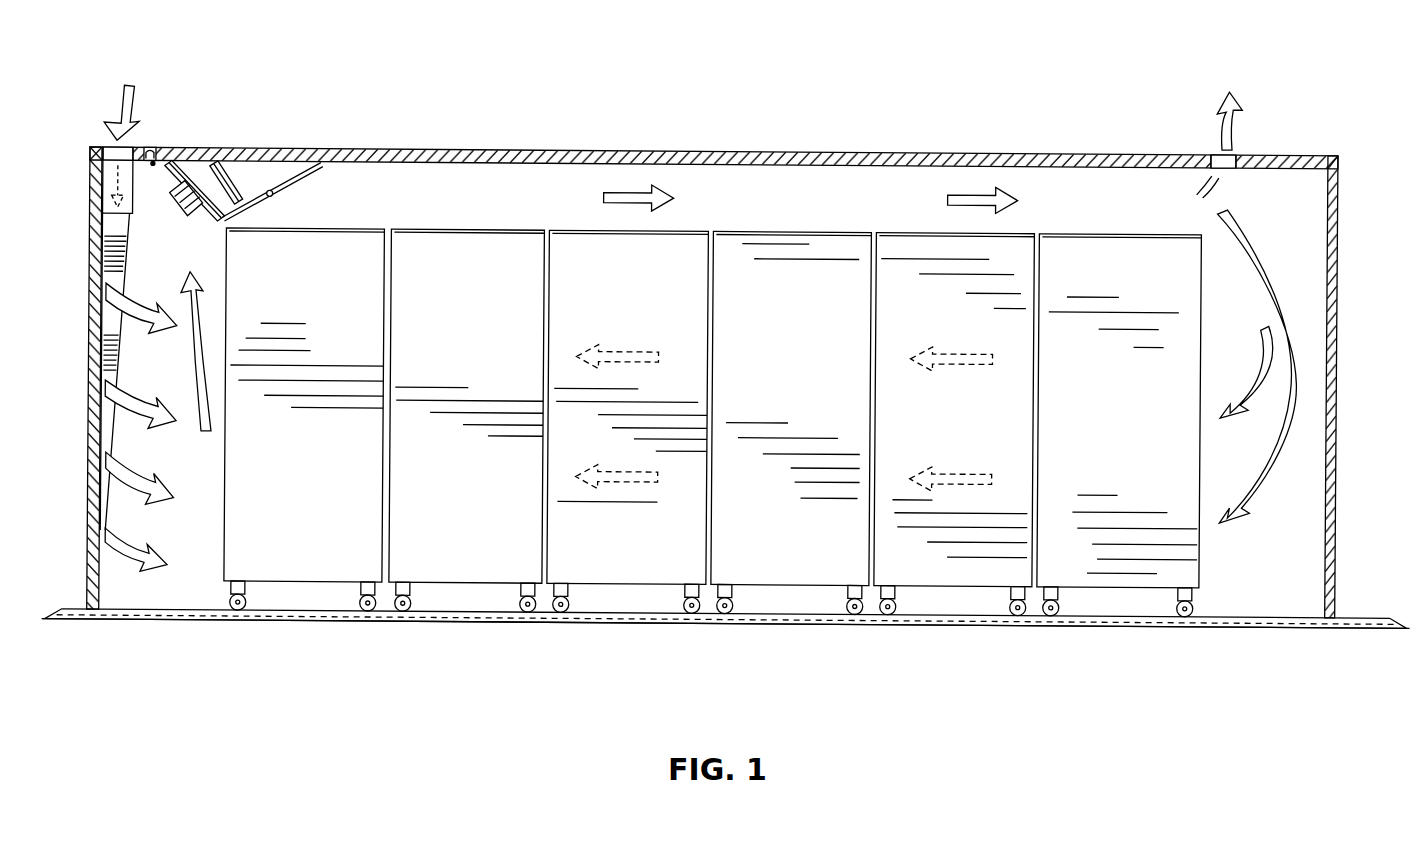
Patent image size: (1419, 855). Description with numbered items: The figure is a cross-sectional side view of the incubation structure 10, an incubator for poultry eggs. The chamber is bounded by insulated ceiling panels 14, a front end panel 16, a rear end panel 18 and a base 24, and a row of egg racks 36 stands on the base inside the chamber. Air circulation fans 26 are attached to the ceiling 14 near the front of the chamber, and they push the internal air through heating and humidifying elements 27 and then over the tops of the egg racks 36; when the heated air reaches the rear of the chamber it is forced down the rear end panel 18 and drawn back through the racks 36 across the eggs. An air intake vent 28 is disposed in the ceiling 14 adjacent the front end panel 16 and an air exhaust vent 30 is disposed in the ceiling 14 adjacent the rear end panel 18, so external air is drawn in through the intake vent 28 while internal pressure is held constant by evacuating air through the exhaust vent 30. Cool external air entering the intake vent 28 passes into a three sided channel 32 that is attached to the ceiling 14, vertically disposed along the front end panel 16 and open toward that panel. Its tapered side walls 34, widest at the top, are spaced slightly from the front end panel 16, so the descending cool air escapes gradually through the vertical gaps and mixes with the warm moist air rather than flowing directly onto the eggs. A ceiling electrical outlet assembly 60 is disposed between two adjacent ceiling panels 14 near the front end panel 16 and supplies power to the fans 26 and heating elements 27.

The incubation structure 10 is at (458, 128).
The insulated ceiling panels 14 is at (727, 147).
The front end panel 16 is at (90, 398).
The rear end panel 18 is at (1341, 361).
The base 24 is at (717, 616).
The air circulation fans 26 is at (221, 200).
The heating and humidifying elements 27 is at (253, 161).
The air intake vent 28 is at (110, 147).
The air exhaust vent 30 is at (1233, 146).
The three sided channel 32 is at (112, 265).
The channel side walls 34 is at (112, 262).
The egg racks 36 is at (308, 288).
The ceiling electrical outlet assembly 60 is at (163, 208).